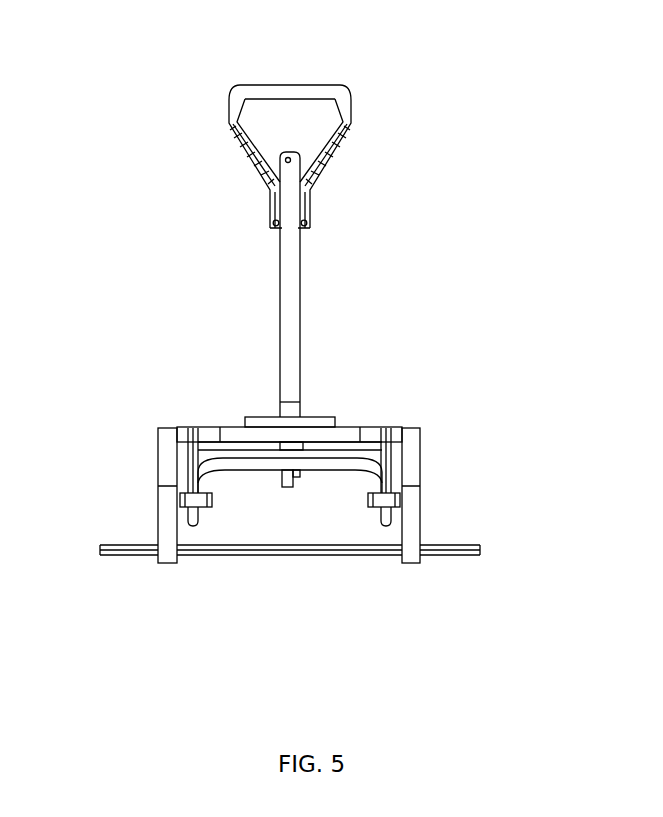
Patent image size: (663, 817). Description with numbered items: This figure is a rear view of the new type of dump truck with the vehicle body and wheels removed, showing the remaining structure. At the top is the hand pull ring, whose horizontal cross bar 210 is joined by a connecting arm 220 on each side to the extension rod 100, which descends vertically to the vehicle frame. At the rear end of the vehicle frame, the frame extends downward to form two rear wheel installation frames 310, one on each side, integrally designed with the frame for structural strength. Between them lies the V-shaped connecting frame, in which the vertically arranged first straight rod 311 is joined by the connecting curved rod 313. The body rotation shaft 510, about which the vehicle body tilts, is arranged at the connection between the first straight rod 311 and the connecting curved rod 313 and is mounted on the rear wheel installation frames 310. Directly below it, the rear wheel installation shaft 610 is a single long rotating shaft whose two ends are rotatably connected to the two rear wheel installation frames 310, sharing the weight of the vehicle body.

The cross bar 210 is at (310, 86).
The connecting arm 220 is at (349, 171).
The extension rod 100 is at (309, 285).
The rear wheel installation frame 310 is at (416, 567).
The first straight rod 311 is at (171, 472).
The connecting curved rod 313 is at (192, 544).
The body rotation shaft 510 is at (372, 521).
The rear wheel installation shaft 610 is at (461, 536).